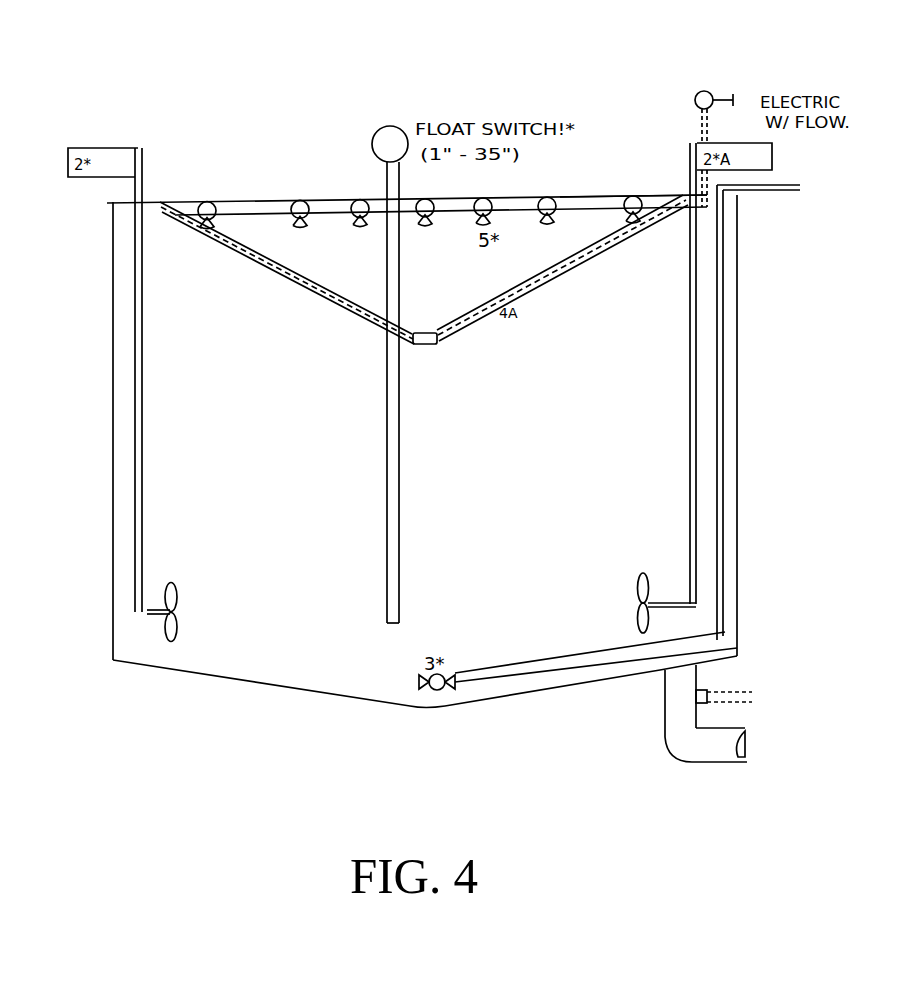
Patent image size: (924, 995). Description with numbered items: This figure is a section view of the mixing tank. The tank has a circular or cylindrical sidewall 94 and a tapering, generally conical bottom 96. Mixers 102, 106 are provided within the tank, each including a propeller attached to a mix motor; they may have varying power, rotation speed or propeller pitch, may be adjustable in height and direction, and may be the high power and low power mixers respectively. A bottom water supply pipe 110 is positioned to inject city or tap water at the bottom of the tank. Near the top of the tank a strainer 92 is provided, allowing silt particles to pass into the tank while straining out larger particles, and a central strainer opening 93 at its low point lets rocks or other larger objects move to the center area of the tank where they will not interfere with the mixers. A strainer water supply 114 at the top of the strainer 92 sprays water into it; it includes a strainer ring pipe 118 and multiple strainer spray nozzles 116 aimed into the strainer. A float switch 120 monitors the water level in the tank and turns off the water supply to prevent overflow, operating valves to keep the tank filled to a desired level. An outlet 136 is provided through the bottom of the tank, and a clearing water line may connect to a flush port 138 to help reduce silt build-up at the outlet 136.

The strainer 92 is at (514, 269).
The central strainer opening 93 is at (498, 367).
The sidewall 94 is at (794, 420).
The bottom 96 is at (425, 707).
The mixer 102 is at (112, 658).
The mixer 106 is at (768, 574).
The bottom water supply pipe 110 is at (580, 697).
The strainer water supply 114 is at (633, 134).
The strainer spray nozzles 116 is at (420, 160).
The strainer ring pipe 118 is at (407, 158).
The float switch 120 is at (454, 319).
The outlet 136 is at (651, 722).
The flush port 138 is at (783, 641).